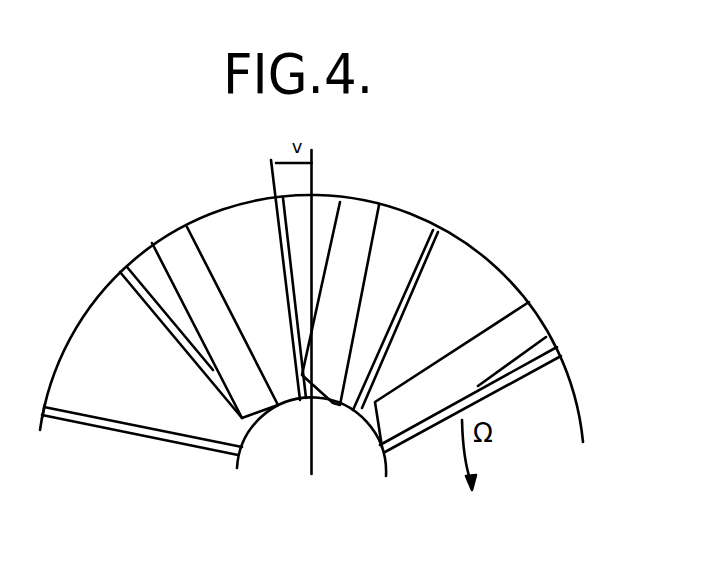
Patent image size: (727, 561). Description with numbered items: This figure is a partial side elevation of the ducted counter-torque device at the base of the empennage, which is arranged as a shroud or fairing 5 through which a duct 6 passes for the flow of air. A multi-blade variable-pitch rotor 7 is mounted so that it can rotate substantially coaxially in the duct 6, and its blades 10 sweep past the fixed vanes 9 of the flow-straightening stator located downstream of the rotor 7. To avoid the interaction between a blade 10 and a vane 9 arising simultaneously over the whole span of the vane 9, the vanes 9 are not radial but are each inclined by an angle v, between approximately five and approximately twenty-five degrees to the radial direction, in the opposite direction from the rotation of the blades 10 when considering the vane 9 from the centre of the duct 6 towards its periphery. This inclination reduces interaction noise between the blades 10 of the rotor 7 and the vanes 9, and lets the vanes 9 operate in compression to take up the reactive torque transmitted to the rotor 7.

The shroud or fairing 5 is at (547, 201).
The duct 6 is at (452, 318).
The multi-blade variable-pitch rotor 7 is at (332, 427).
The fixed vane 9 is at (148, 296).
The blade 10 is at (187, 263).